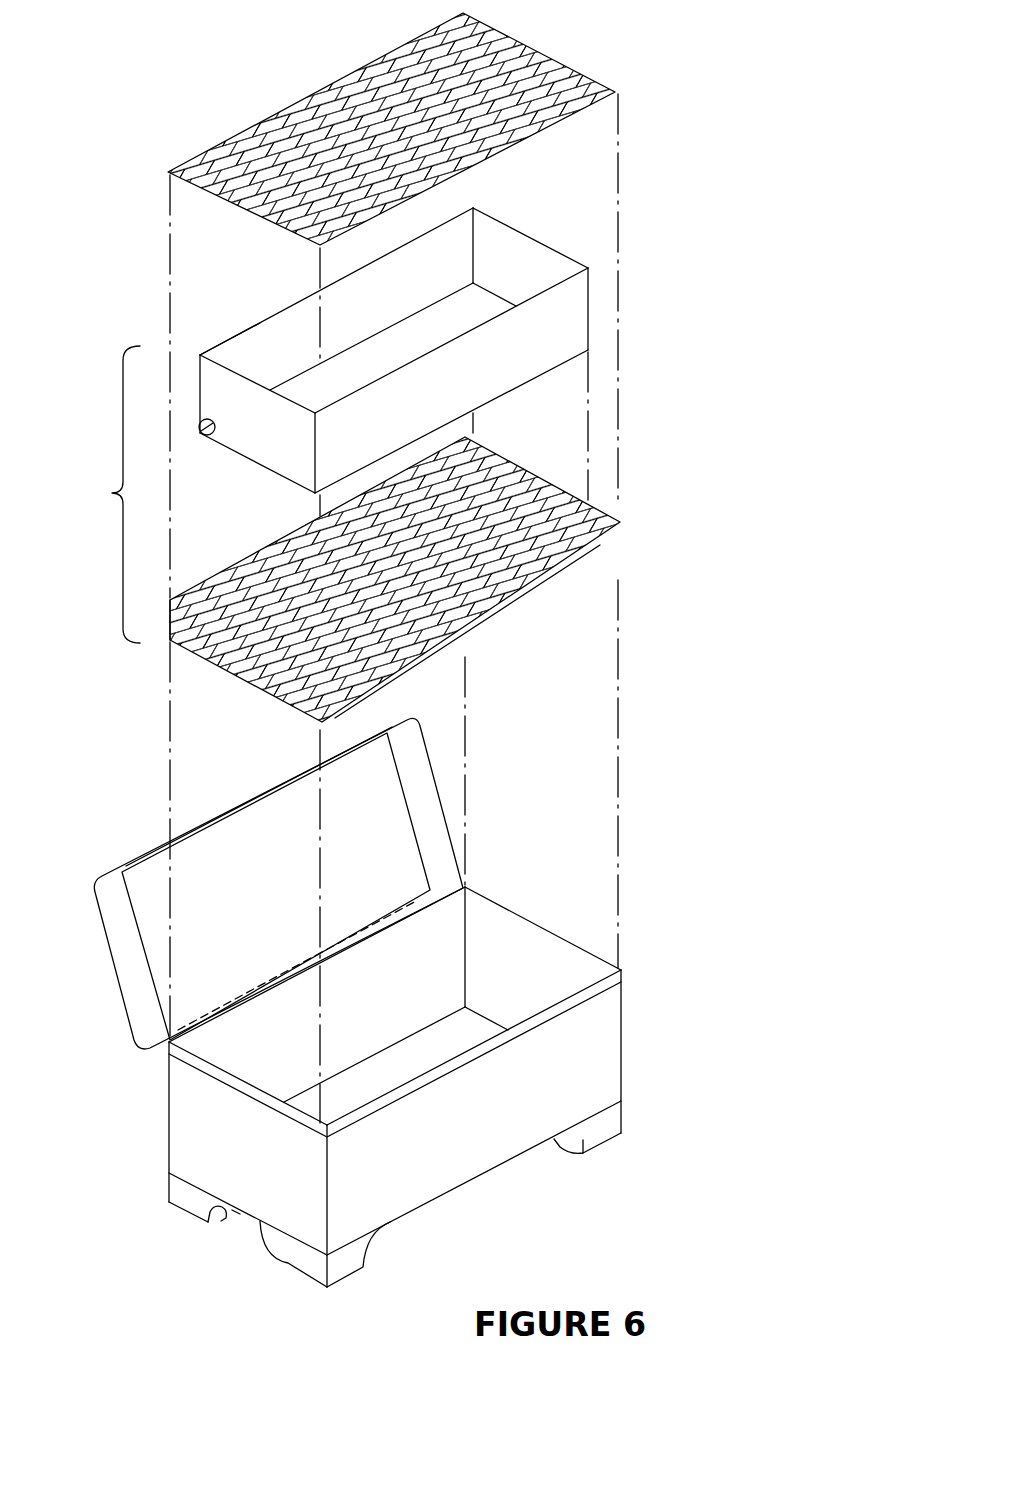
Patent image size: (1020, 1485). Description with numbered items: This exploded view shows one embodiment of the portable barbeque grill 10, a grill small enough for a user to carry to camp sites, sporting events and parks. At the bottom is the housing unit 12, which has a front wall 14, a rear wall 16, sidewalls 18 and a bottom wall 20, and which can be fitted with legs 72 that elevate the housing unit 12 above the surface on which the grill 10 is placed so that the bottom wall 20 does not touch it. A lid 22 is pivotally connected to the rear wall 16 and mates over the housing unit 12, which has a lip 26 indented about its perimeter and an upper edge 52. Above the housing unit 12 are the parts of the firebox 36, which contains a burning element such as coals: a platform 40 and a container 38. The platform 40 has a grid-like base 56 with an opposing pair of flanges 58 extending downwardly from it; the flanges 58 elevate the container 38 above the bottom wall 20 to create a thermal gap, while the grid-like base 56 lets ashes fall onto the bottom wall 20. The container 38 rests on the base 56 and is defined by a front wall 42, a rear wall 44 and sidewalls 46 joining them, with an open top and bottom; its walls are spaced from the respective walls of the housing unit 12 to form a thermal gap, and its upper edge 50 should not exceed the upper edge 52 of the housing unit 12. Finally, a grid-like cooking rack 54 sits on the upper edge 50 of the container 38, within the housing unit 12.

The portable barbeque grill 10 is at (642, 52).
The cooking rack 54 is at (236, 141).
The container 38 is at (568, 225).
The rear wall 44 is at (360, 312).
The sidewalls 46 is at (496, 279).
The front wall 42 is at (448, 386).
The upper edge 50 is at (253, 325).
The firebox 36 is at (108, 494).
The platform 40 is at (610, 483).
The base 56 is at (257, 647).
The flanges 58 is at (188, 630).
The lid 22 is at (118, 962).
The housing unit 12 is at (126, 1143).
The upper edge 52 is at (214, 1063).
The lip 26 is at (258, 1095).
The front wall 14 is at (493, 1112).
The sidewalls 18 is at (508, 981).
The rear wall 16 is at (400, 981).
The bottom wall 20 is at (392, 1078).
The legs 72 is at (601, 1130).